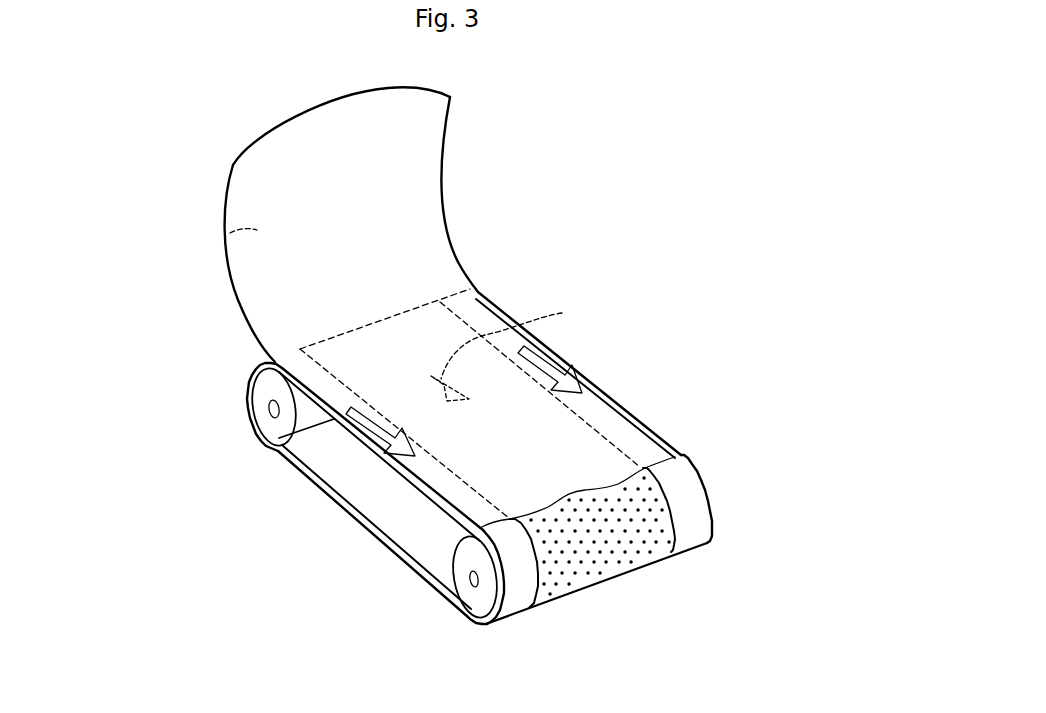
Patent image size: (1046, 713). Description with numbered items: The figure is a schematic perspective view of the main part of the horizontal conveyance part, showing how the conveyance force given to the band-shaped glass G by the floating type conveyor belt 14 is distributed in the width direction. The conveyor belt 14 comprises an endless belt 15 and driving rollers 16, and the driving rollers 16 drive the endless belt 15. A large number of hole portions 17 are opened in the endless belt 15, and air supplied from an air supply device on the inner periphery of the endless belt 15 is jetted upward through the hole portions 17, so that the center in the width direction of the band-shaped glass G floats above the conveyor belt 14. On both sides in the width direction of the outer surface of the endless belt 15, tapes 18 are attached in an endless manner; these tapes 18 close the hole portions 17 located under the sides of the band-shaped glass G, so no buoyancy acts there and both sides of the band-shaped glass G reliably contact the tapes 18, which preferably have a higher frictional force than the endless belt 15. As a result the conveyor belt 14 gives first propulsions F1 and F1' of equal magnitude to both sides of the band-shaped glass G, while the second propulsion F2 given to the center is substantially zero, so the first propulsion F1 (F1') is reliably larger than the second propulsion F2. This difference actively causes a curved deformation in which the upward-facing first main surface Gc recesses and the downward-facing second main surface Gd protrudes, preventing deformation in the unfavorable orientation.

The conveyor belt 14 is at (310, 503).
The endless belt 15 is at (482, 624).
The driving rollers 16 is at (277, 434).
The hole portions 17 is at (632, 503).
The tapes 18 is at (698, 512).
The band-shaped glass G is at (488, 318).
The first main surface Gc is at (307, 135).
The second main surface Gd is at (229, 233).
The first propulsion F1 is at (376, 499).
The first propulsion F1' is at (581, 364).
The second propulsion F2 is at (511, 351).